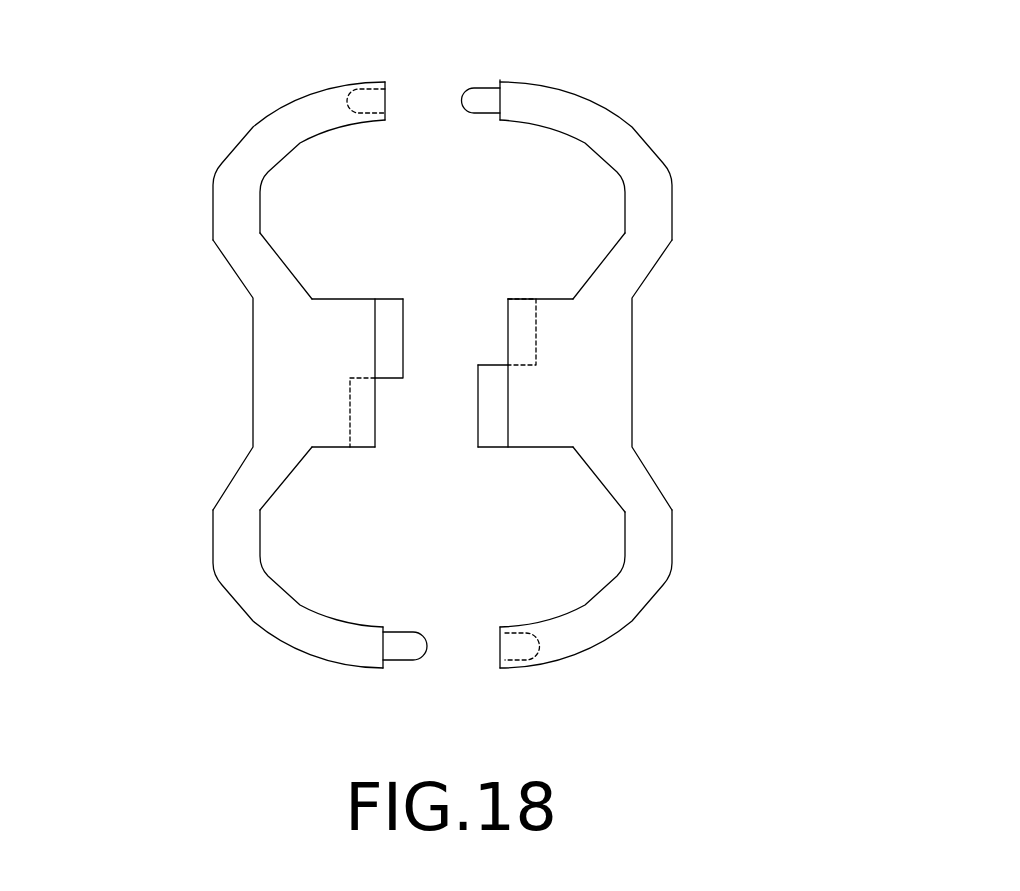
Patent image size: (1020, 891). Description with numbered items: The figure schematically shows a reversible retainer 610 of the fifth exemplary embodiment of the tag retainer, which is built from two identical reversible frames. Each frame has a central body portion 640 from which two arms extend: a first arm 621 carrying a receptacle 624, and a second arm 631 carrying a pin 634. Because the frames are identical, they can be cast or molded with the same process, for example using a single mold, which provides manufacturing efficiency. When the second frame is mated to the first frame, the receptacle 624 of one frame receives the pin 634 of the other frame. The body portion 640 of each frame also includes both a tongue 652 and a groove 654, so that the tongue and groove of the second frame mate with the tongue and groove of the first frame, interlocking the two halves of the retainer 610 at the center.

The reversible retainer 610 is at (754, 122).
The arm 621 is at (279, 133).
The receptacle 624 is at (391, 97).
The arm 631 is at (227, 586).
The pin 634 is at (400, 633).
The body portion 640 is at (293, 363).
The tongue 652 is at (388, 316).
The groove 654 is at (378, 415).